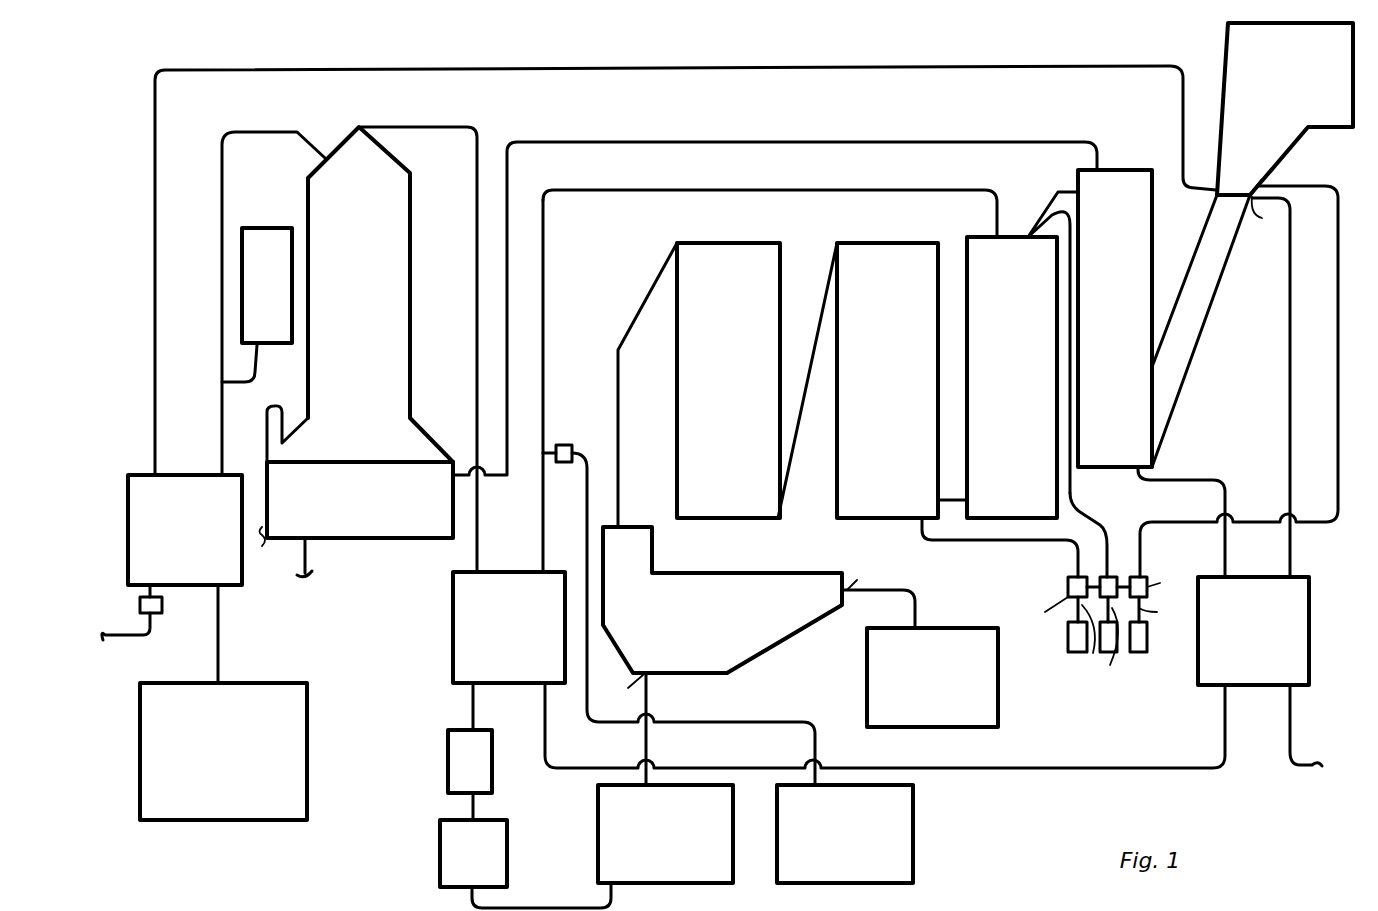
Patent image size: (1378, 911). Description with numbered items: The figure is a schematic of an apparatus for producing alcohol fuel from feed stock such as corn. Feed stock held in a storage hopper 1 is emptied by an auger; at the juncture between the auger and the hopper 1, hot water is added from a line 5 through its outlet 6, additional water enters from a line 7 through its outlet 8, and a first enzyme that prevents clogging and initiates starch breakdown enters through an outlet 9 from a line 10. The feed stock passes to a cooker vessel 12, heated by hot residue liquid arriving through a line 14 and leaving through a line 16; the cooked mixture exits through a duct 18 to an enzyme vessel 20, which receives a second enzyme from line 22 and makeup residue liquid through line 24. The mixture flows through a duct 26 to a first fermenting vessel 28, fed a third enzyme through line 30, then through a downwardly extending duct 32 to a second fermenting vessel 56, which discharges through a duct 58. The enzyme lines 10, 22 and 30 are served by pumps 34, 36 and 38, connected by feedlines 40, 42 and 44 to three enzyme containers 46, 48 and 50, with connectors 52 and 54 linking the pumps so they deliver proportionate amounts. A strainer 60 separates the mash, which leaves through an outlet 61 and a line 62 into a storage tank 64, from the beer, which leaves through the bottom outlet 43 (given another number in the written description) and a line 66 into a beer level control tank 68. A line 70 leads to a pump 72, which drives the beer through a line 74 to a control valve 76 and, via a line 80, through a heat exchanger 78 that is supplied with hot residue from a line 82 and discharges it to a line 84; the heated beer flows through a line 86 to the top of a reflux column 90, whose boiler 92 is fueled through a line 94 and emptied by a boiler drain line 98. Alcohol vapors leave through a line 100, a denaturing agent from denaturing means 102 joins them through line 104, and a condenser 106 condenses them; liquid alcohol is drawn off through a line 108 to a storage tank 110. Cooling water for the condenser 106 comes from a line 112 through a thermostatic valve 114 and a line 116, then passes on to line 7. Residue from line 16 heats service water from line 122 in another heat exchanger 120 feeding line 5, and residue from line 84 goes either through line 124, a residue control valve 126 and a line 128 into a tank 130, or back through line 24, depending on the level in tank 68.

The storage hopper 1 is at (1245, 54).
The hot water line 5 is at (1291, 432).
The outlet 6 is at (1263, 218).
The water line 7 is at (1183, 128).
The outlet 8 is at (1214, 184).
The enzyme outlet 9 is at (1263, 186).
The first enzyme line 10 is at (1338, 348).
The cooker vessel 12 is at (1115, 318).
The hot residue line 14 is at (1022, 142).
The residue discharge line 16 is at (1179, 481).
The duct 18 is at (1040, 222).
The enzyme vessel 20 is at (1012, 377).
The second enzyme line 22 is at (1090, 521).
The makeup residue line 24 is at (955, 190).
The duct 26 is at (949, 499).
The first fermenting vessel 28 is at (887, 380).
The third enzyme line 30 is at (1000, 547).
The downwardly extending duct 32 is at (808, 385).
The pump 34 is at (1166, 574).
The pump 36 is at (1114, 577).
The pump 38 is at (1044, 611).
The feedline 40 is at (1160, 611).
The feedline 42 is at (1112, 645).
The outlet 43 is at (625, 691).
The feedline 44 is at (1089, 644).
The enzyme container 46 is at (1140, 645).
The enzyme container 48 is at (1108, 654).
The enzyme container 50 is at (1078, 645).
The connector 52 is at (1092, 577).
The connector 54 is at (1137, 577).
The second fermenting vessel 56 is at (728, 380).
The duct 58 is at (628, 325).
The strainer 60 is at (722, 600).
The outlet 61 is at (862, 574).
The mash line 62 is at (883, 590).
The storage tank 64 is at (932, 677).
The beer line 66 is at (650, 705).
The beer level control tank 68 is at (665, 834).
The line 70 is at (538, 908).
The pump 72 is at (473, 853).
The line 74 is at (477, 803).
The control valve 76 is at (470, 761).
The heat exchanger 78 is at (509, 627).
The line 80 is at (473, 708).
The hot residue line 82 is at (547, 755).
The residue line 84 is at (543, 542).
The heated beer line 86 is at (267, 430).
The reflux column 90 is at (380, 294).
The boiler 92 is at (360, 500).
The fuel line 94 is at (308, 570).
The boiler drain line 98 is at (272, 550).
The alcohol vapor line 100 is at (247, 132).
The denaturing means 102 is at (258, 232).
The denaturant line 104 is at (257, 372).
The condenser 106 is at (185, 530).
The line 108 is at (220, 638).
The storage tank 110 is at (223, 751).
The service water line 112 is at (142, 638).
The thermostatic valve 114 is at (162, 608).
The line 116 is at (160, 593).
The heat exchanger 120 is at (1253, 631).
The service water line 122 is at (1311, 725).
The line 124 is at (545, 453).
The residue control valve 126 is at (583, 441).
The line 128 is at (588, 487).
The tank 130 is at (845, 834).